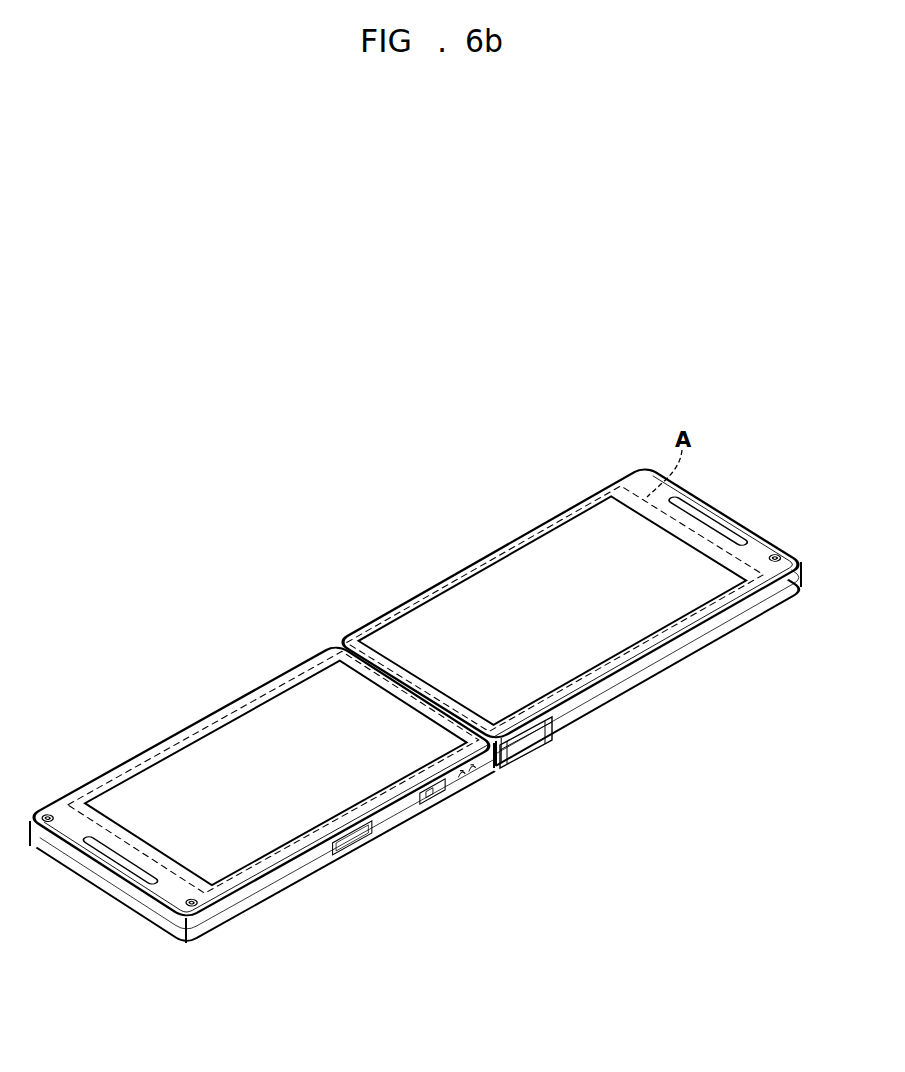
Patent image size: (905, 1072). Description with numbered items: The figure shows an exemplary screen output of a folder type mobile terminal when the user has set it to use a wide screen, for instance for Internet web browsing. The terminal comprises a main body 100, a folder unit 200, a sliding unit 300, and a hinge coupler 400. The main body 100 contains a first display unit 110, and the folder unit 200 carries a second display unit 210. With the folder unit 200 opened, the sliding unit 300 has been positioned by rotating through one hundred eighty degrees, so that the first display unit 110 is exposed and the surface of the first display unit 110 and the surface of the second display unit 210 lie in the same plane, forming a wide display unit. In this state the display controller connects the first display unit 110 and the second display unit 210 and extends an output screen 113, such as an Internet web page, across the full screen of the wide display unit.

The main body 100 is at (275, 882).
The first display unit 110 is at (397, 767).
The output screen 113 is at (211, 748).
The folder unit 200 is at (768, 602).
The second display unit 210 is at (632, 633).
The sliding unit 300 is at (590, 698).
The hinge coupler 400 is at (523, 743).